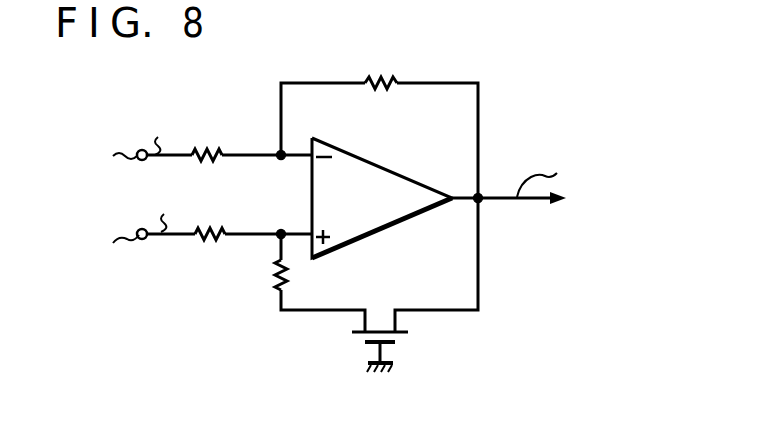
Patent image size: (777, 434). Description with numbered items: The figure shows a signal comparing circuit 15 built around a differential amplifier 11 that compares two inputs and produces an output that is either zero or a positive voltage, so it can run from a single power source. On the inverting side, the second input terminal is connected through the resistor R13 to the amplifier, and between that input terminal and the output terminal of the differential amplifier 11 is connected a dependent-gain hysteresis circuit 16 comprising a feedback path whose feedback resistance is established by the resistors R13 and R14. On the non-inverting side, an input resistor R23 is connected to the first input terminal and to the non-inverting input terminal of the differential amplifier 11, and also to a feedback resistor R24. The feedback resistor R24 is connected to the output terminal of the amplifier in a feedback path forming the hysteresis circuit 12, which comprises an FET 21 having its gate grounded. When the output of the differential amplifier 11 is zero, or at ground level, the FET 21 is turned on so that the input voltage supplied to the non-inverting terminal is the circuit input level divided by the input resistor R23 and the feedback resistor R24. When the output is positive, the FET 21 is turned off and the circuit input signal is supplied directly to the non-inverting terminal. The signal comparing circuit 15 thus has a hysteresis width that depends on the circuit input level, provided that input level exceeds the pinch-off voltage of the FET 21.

The signal comparing circuit 15 is at (290, 66).
The differential amplifier 11 is at (398, 226).
The dependent-gain hysteresis circuit 16 is at (478, 120).
The hysteresis circuit 12 is at (478, 281).
The FET 21 is at (396, 342).
The resistor R13 is at (213, 154).
The resistor R14 is at (391, 87).
The input resistor R23 is at (210, 240).
The feedback resistor R24 is at (287, 274).